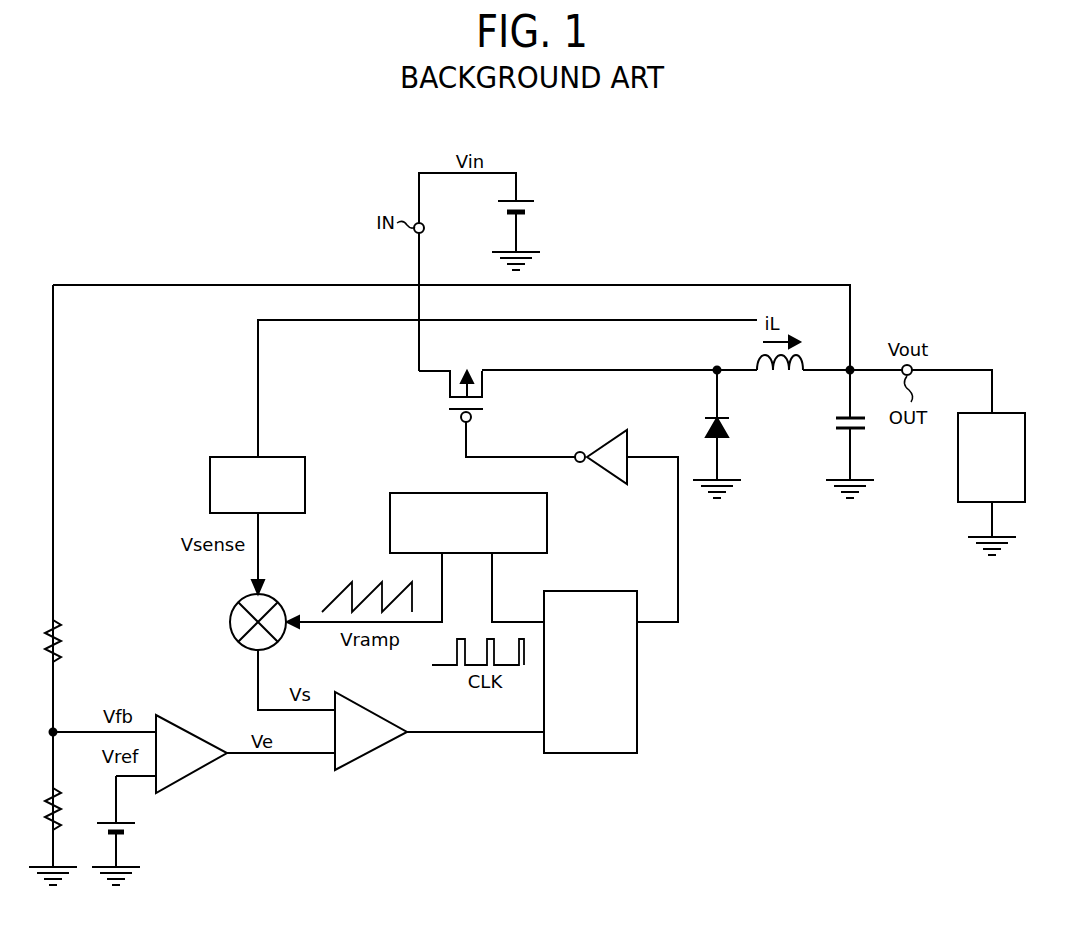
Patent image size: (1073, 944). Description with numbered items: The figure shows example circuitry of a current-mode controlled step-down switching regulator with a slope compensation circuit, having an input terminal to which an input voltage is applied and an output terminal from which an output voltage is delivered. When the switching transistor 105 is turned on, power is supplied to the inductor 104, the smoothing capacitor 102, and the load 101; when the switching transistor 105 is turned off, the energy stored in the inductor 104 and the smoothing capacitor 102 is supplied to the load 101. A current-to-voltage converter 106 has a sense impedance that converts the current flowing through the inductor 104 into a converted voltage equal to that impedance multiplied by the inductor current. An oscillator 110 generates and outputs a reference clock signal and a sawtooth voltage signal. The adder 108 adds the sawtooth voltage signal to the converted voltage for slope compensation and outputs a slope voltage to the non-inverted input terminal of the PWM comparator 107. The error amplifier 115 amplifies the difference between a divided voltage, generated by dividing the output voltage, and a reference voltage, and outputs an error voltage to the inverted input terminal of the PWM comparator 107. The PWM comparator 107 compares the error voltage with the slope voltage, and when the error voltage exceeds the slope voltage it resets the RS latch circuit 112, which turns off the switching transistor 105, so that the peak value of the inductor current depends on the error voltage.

The load 101 is at (1005, 413).
The smoothing capacitor 102 is at (842, 432).
The inductor 104 is at (800, 352).
The switching transistor 105 is at (442, 400).
The current-to-voltage converter 106 is at (277, 457).
The PWM comparator 107 is at (365, 757).
The adder 108 is at (232, 619).
The oscillator 110 is at (547, 521).
The RS latch circuit 112 is at (602, 753).
The error amplifier 115 is at (193, 773).